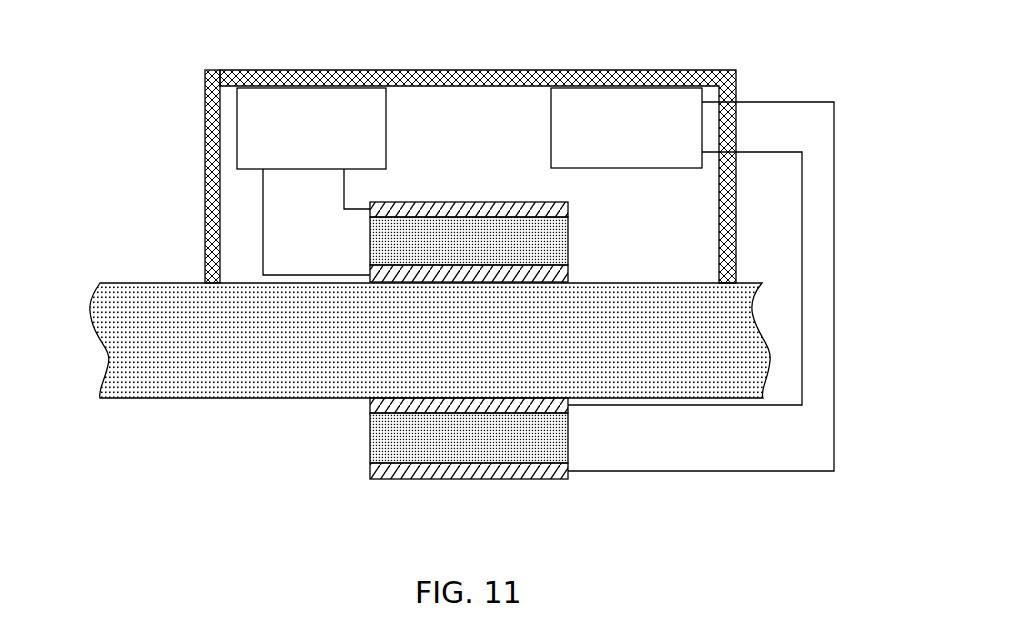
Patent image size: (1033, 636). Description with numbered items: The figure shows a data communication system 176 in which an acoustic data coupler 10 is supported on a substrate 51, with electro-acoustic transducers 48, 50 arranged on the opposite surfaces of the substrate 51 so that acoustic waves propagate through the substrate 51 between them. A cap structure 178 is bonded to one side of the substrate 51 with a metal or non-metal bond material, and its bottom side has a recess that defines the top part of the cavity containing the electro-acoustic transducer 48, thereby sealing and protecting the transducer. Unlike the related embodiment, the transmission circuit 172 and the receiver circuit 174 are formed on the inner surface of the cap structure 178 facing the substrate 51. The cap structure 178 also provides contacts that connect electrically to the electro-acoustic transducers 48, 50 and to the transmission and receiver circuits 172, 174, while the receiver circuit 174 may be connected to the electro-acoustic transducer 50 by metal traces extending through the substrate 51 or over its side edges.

The acoustic data coupler 10 is at (484, 367).
The electro-acoustic transducer 48 is at (588, 219).
The electro-acoustic transducer 50 is at (586, 488).
The substrate 51 is at (93, 335).
The transmission circuit 172 is at (386, 128).
The receiver circuit 174 is at (551, 130).
The data communication system 176 is at (471, 146).
The cap structure 178 is at (204, 175).